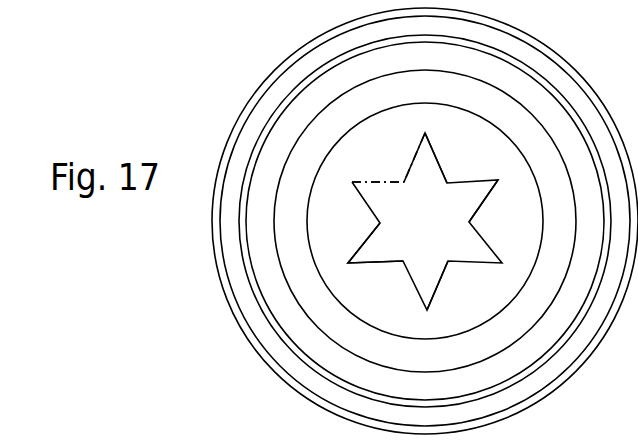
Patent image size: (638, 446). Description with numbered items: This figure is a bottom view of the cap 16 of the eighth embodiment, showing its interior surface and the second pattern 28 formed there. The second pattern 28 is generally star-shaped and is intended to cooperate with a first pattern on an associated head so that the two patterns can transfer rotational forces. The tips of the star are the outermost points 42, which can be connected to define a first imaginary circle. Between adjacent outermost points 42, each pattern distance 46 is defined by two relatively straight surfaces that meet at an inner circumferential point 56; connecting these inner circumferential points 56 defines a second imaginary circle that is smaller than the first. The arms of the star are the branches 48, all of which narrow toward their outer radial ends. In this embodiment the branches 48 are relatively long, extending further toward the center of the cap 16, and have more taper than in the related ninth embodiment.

The cap 16 is at (208, 294).
The second pattern 28 is at (488, 243).
The outermost points 42 is at (426, 134).
The pattern distances 46 is at (382, 183).
The branches 48 is at (478, 190).
The inner circumferential point 56 is at (447, 262).